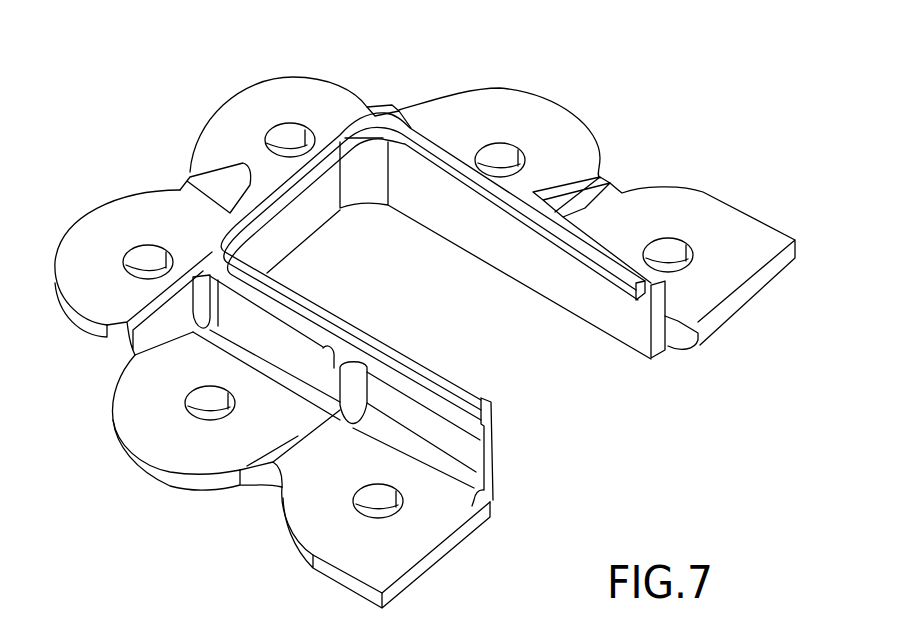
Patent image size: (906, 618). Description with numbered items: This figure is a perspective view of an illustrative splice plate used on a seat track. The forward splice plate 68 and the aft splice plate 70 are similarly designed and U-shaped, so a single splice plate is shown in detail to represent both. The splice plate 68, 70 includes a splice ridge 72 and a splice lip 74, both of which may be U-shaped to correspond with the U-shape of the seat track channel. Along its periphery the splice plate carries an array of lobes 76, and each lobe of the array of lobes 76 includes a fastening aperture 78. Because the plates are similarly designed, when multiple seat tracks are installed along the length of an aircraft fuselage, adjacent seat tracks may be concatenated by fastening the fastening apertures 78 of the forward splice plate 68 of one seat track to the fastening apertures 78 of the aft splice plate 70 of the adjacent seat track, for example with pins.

The forward splice plate 68 is at (700, 53).
The aft splice plate 70 is at (702, 194).
The splice ridge 72 is at (465, 393).
The splice lip 74 is at (487, 408).
The array of lobes 76 is at (498, 118).
The fastening aperture 78 is at (502, 165).